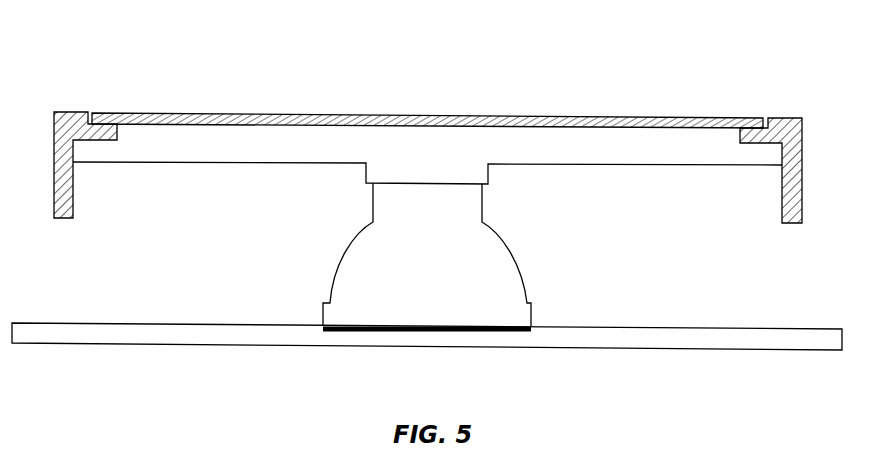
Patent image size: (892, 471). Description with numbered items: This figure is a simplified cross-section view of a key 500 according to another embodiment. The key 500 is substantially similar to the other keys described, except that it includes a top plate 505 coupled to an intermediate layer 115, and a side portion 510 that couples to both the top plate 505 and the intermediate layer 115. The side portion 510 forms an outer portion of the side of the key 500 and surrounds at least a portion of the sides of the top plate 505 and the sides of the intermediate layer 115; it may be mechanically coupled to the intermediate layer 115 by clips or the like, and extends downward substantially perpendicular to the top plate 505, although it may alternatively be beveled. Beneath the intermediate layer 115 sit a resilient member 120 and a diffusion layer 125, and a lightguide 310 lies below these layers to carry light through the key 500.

The key 500 is at (432, 213).
The top plate 505 is at (590, 113).
The side portion 510 is at (103, 80).
The intermediate layer 115 is at (257, 169).
The resilient member 120 is at (338, 266).
The diffusion layer 125 is at (575, 312).
The lightguide 310 is at (253, 321).